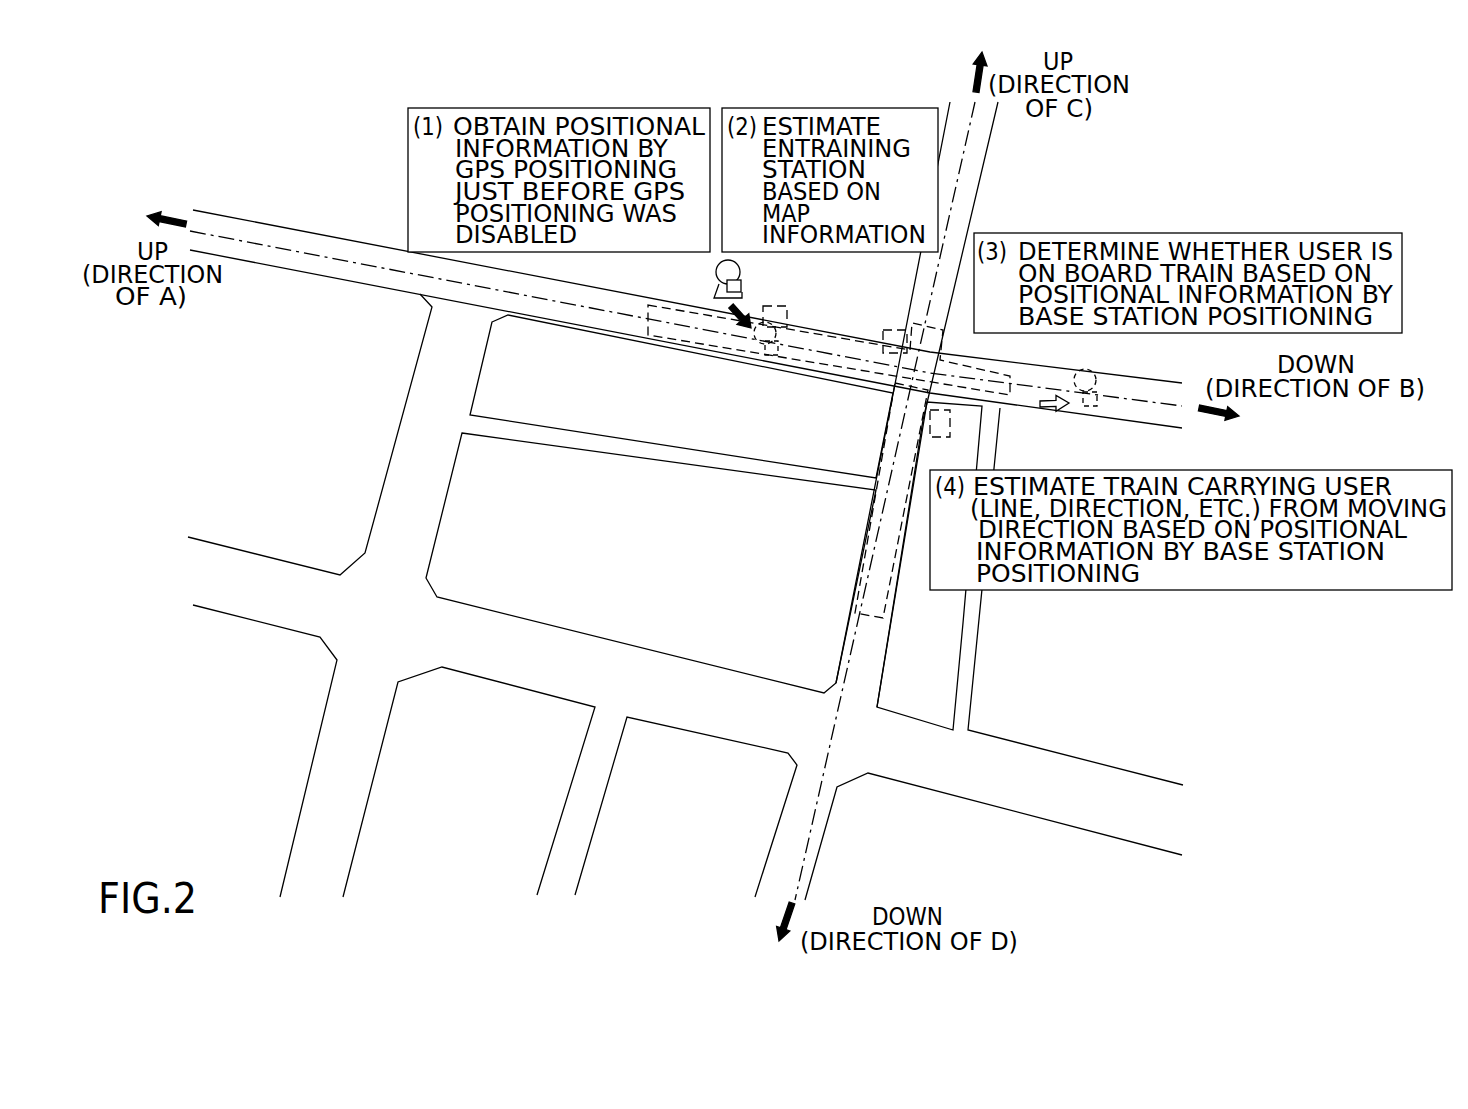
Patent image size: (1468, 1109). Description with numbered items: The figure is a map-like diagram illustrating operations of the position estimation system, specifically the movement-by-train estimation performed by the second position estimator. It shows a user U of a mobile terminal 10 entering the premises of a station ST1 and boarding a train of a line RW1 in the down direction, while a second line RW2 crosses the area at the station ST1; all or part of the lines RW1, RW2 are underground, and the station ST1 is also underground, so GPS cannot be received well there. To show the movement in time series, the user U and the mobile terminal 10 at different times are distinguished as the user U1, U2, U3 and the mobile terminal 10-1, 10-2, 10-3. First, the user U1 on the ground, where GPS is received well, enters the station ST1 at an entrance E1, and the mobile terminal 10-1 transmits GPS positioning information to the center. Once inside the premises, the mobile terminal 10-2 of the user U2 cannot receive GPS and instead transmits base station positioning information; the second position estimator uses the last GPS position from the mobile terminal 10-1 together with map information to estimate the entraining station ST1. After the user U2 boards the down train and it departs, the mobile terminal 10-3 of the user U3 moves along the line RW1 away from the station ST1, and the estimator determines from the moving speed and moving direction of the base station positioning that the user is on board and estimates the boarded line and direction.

The mobile terminal 10 is at (953, 368).
The mobile terminal at time t1 10-1 is at (742, 284).
The mobile terminal at time t2 10-2 is at (777, 360).
The mobile terminal at time t4 10-3 is at (1100, 405).
The user U is at (867, 363).
The user at time t1 U1 is at (714, 263).
The user at time t2 U2 is at (752, 348).
The user at time t4 U3 is at (1070, 412).
The entrance E1 is at (789, 313).
The station ST1 is at (898, 588).
The line RW1 is at (320, 256).
The line RW2 is at (956, 206).